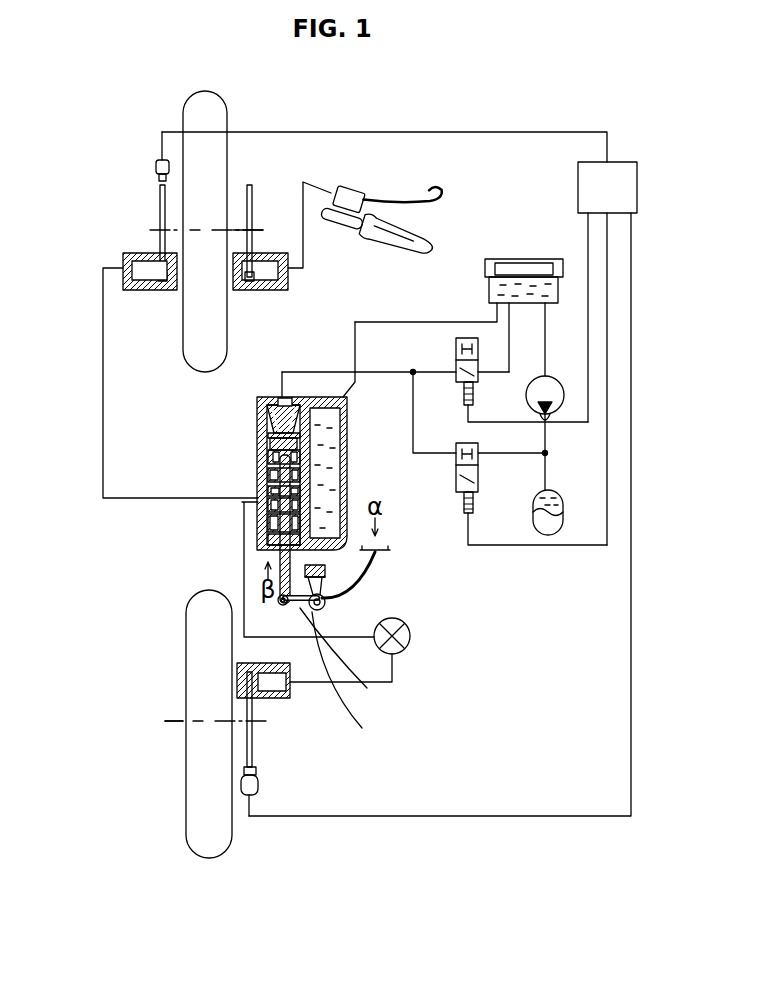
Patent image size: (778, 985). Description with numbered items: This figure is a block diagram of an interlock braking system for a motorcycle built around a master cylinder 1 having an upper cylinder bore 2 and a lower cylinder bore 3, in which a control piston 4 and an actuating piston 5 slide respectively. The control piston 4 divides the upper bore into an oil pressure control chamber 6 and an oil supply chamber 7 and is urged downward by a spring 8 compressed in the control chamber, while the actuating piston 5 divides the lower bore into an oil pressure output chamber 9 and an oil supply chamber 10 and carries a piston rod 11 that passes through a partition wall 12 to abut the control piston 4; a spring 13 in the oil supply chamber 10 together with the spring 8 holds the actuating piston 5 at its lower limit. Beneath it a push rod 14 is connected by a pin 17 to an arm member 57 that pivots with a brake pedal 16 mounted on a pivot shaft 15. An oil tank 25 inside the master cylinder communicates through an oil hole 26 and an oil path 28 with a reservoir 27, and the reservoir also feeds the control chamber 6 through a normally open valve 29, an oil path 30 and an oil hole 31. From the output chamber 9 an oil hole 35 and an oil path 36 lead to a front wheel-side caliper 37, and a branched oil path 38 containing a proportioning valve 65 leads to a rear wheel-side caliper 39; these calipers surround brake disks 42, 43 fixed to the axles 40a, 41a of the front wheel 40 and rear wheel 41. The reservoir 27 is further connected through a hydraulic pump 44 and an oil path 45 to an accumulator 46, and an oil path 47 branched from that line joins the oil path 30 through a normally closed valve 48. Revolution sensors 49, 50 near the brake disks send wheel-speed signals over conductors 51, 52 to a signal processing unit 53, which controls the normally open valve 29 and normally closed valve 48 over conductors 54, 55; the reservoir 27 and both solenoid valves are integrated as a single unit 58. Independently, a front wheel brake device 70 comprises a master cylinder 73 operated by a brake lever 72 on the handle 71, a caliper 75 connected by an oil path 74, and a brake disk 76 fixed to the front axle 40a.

The master cylinder 1 is at (288, 500).
The upper cylinder bore 2 is at (268, 432).
The lower cylinder bore 3 is at (262, 526).
The control piston 4 is at (330, 440).
The actuating piston 5 is at (262, 548).
The oil pressure control chamber 6 is at (270, 422).
The oil supply chamber 7 is at (265, 452).
The spring 8 is at (292, 410).
The oil pressure output chamber 9 is at (354, 524).
The oil supply chamber 10 is at (378, 560).
The piston rod 11 is at (312, 500).
The partition wall 12 is at (268, 472).
The spring 13 is at (266, 504).
The push rod 14 is at (291, 605).
The pivot shaft 15 is at (328, 604).
The brake pedal 16 is at (360, 590).
The pin 17 is at (278, 605).
The oil tank 25 is at (330, 482).
The oil hole 26 is at (349, 408).
The reservoir 27 is at (522, 265).
The oil path 28 is at (452, 320).
The normally open valve 29 is at (478, 358).
The oil path 30 is at (393, 372).
The oil hole 31 is at (278, 400).
The oil hole 35 is at (262, 492).
The oil path 36 is at (103, 400).
The front wheel-side caliper 37 is at (125, 288).
The oil path 38 is at (345, 661).
The rear wheel-side caliper 39 is at (290, 693).
The front wheel 40 is at (222, 93).
The axle 40a is at (256, 230).
The rear wheel 41 is at (215, 858).
The axle 41a is at (185, 742).
The brake disk 42 is at (158, 206).
The brake disk 43 is at (252, 750).
The hydraulic pump 44 is at (553, 383).
The oil path 45 is at (548, 440).
The accumulator 46 is at (563, 510).
The oil path 47 is at (480, 452).
The normally closed valve 48 is at (474, 495).
The revolution sensor 49 is at (156, 165).
The revolution sensor 50 is at (258, 785).
The conductor 51 is at (540, 131).
The conductor 52 is at (510, 816).
The signal processing unit 53 is at (630, 185).
The conductor 54 is at (590, 305).
The conductor 55 is at (610, 411).
The arm member 57 is at (347, 686).
The single unit 58 is at (477, 252).
The proportioning valve 65 is at (410, 636).
The front wheel brake device 70 is at (407, 198).
The handle 71 is at (370, 255).
The brake lever 72 is at (436, 181).
The master cylinder 73 is at (396, 185).
The oil path 74 is at (304, 182).
The caliper 75 is at (285, 287).
The brake disk 76 is at (250, 185).